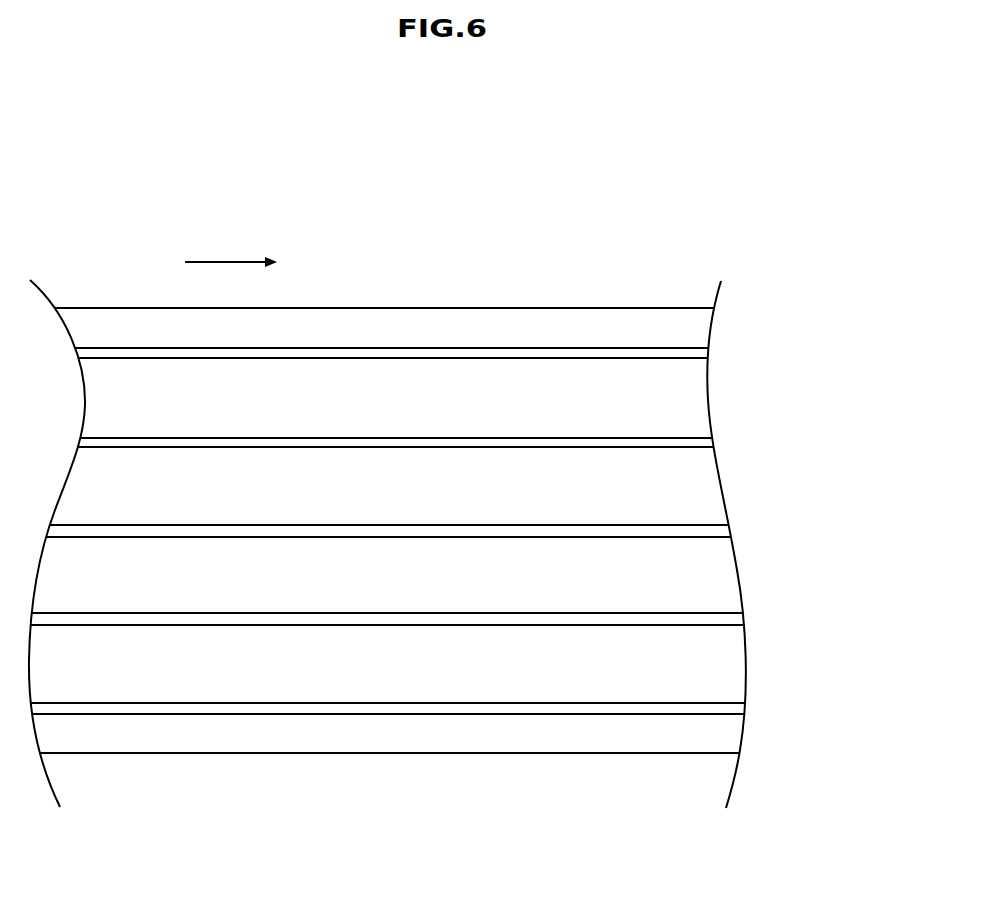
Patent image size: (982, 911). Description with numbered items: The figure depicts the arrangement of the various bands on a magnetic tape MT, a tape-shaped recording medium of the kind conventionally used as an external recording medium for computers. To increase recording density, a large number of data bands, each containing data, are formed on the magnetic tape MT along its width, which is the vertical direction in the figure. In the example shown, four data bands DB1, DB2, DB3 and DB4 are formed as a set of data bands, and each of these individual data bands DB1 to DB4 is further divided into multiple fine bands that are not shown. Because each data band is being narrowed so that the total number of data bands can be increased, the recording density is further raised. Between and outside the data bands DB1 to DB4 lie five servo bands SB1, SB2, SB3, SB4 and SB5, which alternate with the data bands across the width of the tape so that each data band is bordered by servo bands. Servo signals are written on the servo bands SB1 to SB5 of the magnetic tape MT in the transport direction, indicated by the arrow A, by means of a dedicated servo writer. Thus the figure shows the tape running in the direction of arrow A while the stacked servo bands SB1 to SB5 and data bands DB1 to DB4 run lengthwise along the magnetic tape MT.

The magnetic tape MT is at (598, 267).
The arrow indicating transport direction A is at (220, 264).
The servo band SB1 is at (673, 353).
The servo band SB2 is at (673, 442).
The servo band SB3 is at (690, 532).
The servo band SB4 is at (693, 620).
The servo band SB5 is at (693, 709).
The data band DB1 is at (594, 395).
The data band DB2 is at (594, 484).
The data band DB3 is at (594, 574).
The data band DB4 is at (594, 662).